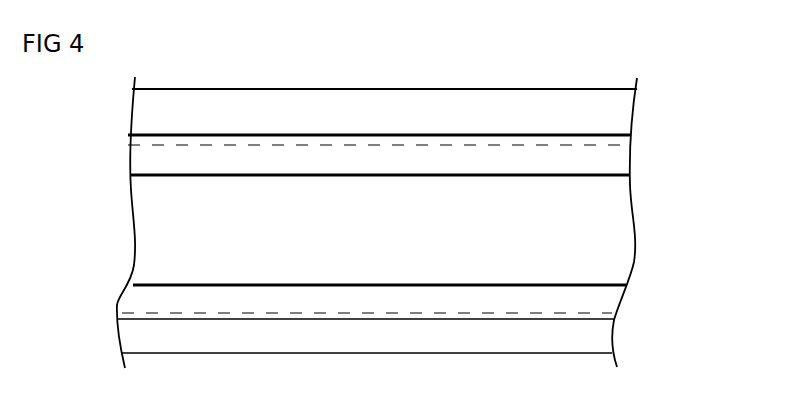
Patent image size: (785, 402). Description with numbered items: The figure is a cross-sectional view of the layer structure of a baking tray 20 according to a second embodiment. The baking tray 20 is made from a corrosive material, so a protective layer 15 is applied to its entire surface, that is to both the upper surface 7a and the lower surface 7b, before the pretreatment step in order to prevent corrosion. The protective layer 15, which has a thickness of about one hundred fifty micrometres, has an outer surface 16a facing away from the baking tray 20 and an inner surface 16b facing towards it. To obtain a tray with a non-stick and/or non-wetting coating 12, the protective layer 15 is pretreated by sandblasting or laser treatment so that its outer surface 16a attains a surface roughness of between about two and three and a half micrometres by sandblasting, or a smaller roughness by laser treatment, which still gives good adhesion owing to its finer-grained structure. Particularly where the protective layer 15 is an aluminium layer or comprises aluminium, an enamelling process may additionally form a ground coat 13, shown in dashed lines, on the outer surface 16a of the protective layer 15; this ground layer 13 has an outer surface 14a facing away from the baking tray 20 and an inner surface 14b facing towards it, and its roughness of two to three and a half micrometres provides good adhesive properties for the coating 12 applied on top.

The non-stick and/or non-wetting coating 12 is at (600, 114).
The ground layer 13 is at (126, 136).
The protective layer 15 is at (600, 157).
The baking tray 20 is at (598, 242).
The upper surface 7a is at (160, 174).
The lower surface 7b is at (515, 285).
The outer surface 14a is at (270, 133).
The inner surface 14b is at (230, 147).
The outer surface 16a is at (322, 141).
The inner surface 16b is at (425, 178).